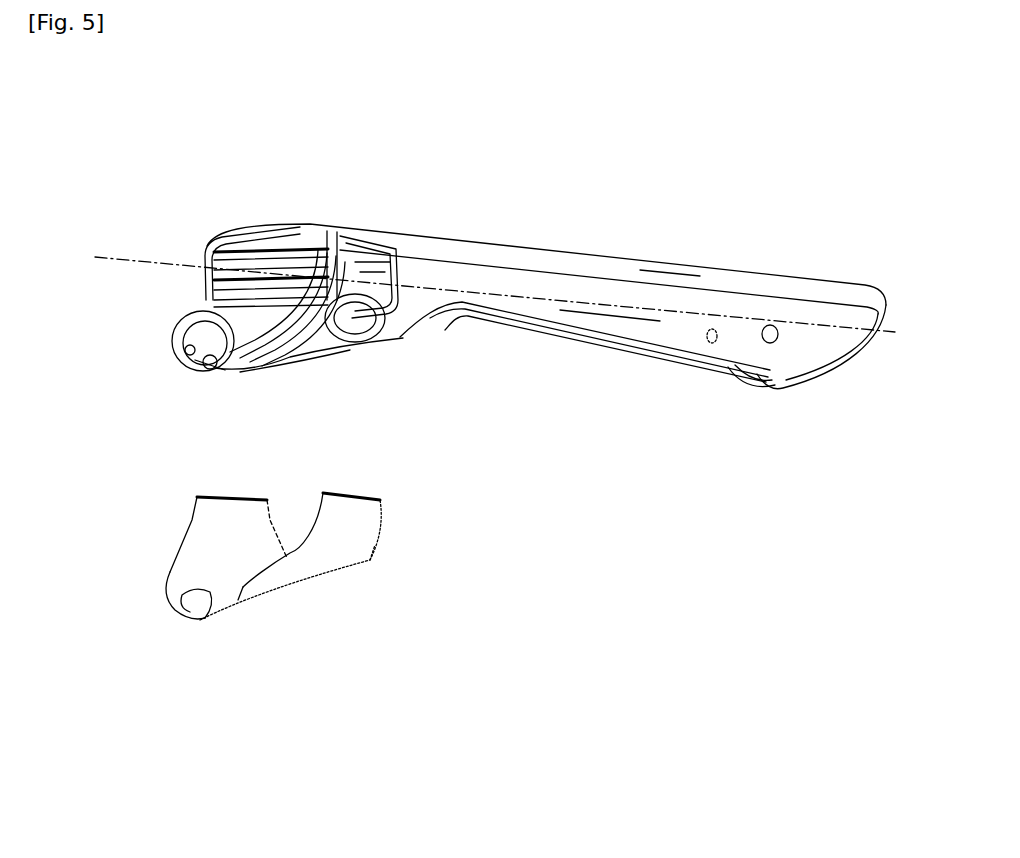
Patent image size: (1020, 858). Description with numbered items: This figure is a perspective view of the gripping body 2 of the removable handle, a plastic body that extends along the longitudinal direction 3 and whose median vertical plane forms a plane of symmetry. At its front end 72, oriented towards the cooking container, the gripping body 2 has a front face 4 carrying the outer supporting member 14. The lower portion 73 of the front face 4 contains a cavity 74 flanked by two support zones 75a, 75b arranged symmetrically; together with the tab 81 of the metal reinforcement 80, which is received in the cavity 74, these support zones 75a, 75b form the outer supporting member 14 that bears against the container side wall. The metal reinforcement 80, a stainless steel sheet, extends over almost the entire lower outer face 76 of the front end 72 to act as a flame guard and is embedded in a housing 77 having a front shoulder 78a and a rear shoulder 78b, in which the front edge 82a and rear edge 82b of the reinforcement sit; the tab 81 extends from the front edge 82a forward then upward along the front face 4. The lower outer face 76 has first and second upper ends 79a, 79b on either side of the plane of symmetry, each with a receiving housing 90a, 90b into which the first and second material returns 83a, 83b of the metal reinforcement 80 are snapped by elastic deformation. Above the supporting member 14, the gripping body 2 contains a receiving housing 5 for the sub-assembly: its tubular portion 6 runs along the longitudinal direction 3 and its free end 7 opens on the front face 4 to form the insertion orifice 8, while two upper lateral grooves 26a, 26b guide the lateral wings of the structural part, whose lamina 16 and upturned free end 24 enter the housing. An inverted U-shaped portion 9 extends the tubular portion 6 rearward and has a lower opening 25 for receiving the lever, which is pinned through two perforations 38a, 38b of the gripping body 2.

The gripping body 2 is at (182, 138).
The longitudinal direction 3 is at (883, 325).
The front face 4 is at (230, 325).
The receiving housing 5 is at (473, 323).
The tubular portion 6 is at (252, 292).
The free end 7 is at (260, 290).
The insertion orifice 8 is at (262, 295).
The inverted U-shaped portion 9 is at (552, 323).
The outer supporting member 14 is at (183, 595).
The lamina 16 is at (612, 352).
The free end 24 is at (665, 333).
The lower opening 25 is at (598, 333).
The upper lateral groove 26a is at (323, 257).
The upper lateral groove 26b is at (217, 247).
The perforation 38a is at (778, 327).
The perforation 38b is at (705, 337).
The front end 72 is at (348, 295).
The lower portion 73 is at (215, 348).
The cavity 74 is at (230, 357).
The support zone 75a is at (243, 363).
The support zone 75b is at (210, 345).
The lower outer face 76 is at (290, 357).
The housing 77 is at (330, 330).
The front shoulder 78a is at (270, 348).
The rear shoulder 78b is at (390, 310).
The first upper end 79a is at (372, 265).
The second upper end 79b is at (243, 287).
The metal reinforcement 80 is at (317, 570).
The tab 81 is at (200, 620).
The front edge 82a is at (243, 587).
The rear edge 82b is at (372, 558).
The first material return 83a is at (373, 500).
The second material return 83b is at (195, 498).
The first receiving housing 90a is at (380, 257).
The second receiving housing 90b is at (230, 263).